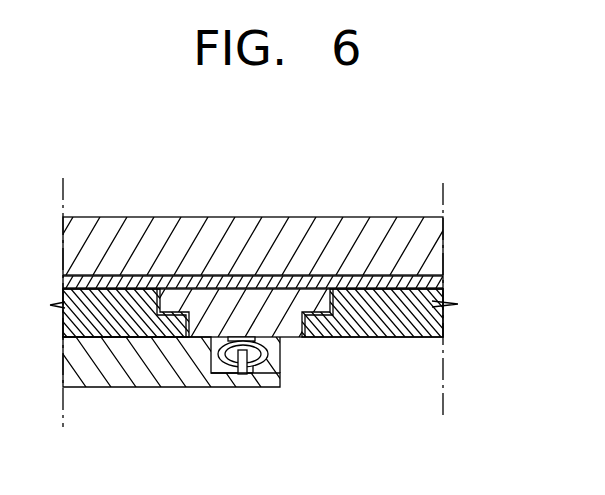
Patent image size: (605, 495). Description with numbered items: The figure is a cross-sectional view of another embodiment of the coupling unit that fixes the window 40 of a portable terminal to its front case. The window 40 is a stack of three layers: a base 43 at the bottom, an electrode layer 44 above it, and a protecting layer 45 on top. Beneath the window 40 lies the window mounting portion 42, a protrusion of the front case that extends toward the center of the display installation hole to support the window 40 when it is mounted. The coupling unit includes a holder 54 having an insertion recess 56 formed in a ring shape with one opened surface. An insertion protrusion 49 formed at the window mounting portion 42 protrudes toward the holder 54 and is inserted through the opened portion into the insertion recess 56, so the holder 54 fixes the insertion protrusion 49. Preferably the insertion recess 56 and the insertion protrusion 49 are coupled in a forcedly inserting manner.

The window 40 is at (279, 277).
The protecting layer 45 is at (430, 247).
The electrode layer 44 is at (432, 280).
The base 43 is at (255, 313).
The window mounting portion 42 is at (125, 363).
The holder 54 is at (268, 356).
The insertion protrusion 49 is at (243, 375).
The insertion recess 56 is at (237, 372).